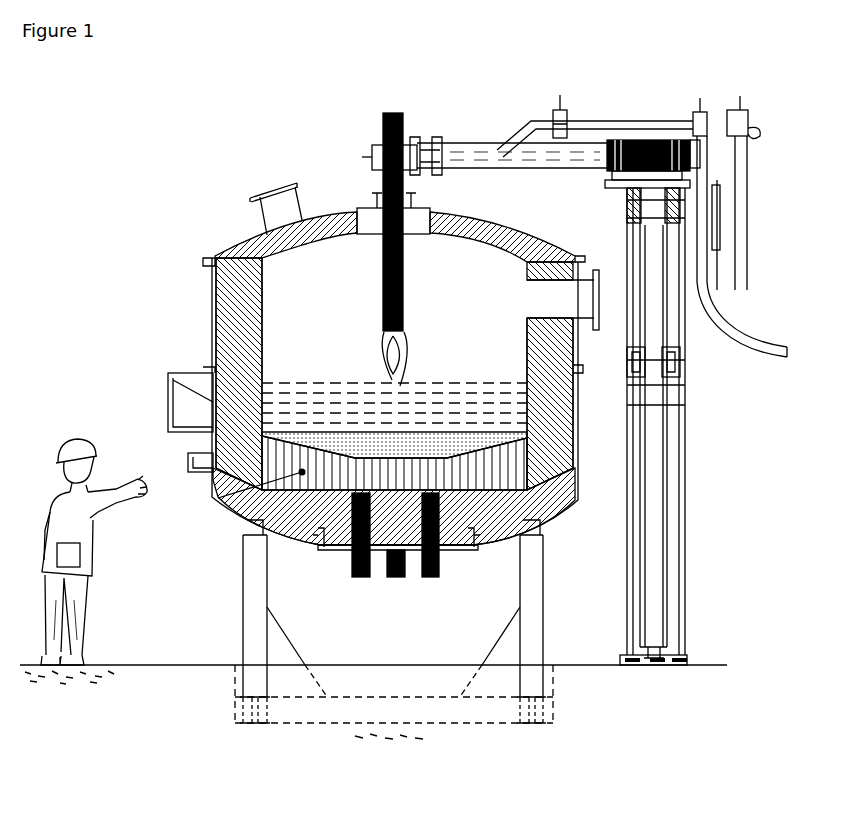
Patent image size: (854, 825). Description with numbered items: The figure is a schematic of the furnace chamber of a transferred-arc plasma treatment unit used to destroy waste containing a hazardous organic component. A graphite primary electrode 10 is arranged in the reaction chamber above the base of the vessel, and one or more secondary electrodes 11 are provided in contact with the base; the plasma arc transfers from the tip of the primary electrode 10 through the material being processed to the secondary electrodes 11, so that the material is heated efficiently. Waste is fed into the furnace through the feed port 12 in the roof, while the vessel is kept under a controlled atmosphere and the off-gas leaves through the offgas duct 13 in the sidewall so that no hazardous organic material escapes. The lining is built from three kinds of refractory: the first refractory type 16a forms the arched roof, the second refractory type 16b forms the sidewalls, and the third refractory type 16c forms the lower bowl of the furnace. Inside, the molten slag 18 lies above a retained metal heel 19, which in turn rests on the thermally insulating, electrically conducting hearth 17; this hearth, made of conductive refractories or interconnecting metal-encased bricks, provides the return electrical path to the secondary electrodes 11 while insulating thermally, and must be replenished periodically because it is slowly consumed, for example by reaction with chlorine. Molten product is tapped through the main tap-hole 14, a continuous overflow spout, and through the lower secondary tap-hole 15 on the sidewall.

The primary electrode 10 is at (383, 123).
The secondary electrode or electrodes 11 is at (420, 575).
The feed port 12 is at (257, 192).
The offgas duct 13 is at (600, 265).
The main tap-hole 14 is at (168, 368).
The secondary tap-hole 15 is at (186, 455).
The refractory type 1 16a is at (513, 242).
The refractory type 2 16b is at (550, 413).
The refractory type 3 16c is at (547, 477).
The thermally insulating electrically conducting hearth 17 is at (240, 513).
The slag 18 is at (292, 400).
The retained metal heel 19 is at (333, 443).